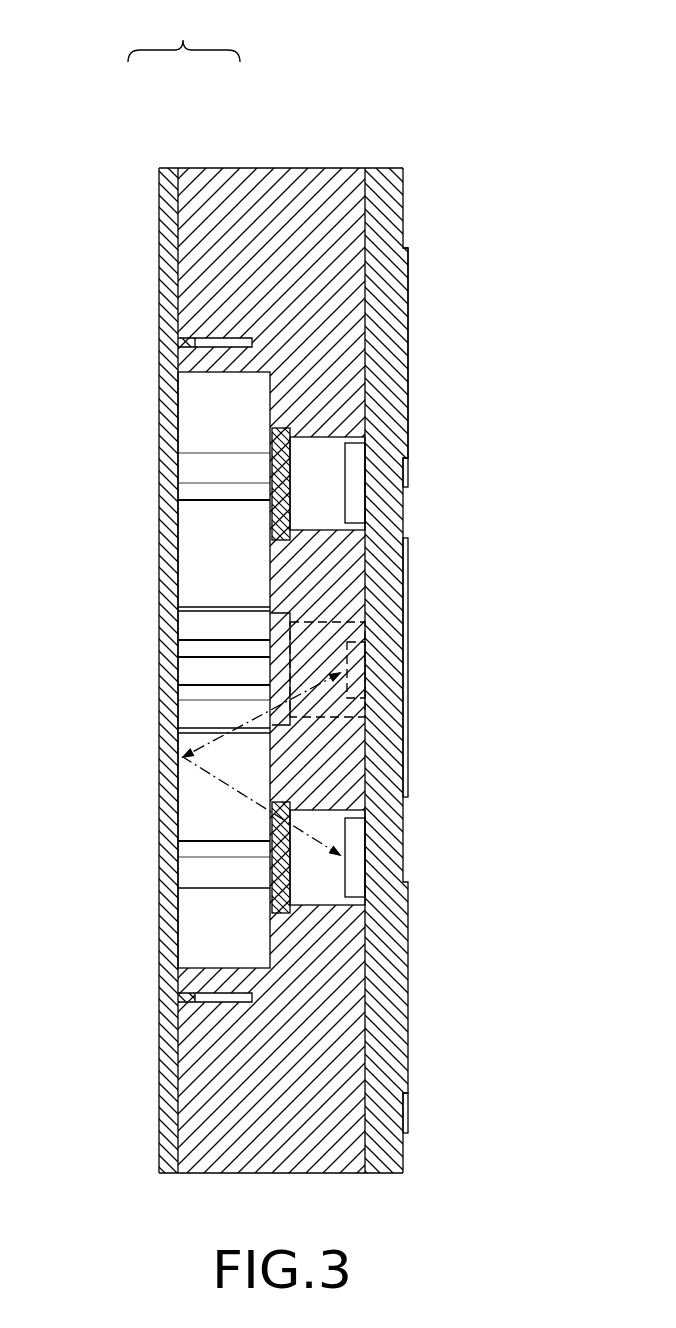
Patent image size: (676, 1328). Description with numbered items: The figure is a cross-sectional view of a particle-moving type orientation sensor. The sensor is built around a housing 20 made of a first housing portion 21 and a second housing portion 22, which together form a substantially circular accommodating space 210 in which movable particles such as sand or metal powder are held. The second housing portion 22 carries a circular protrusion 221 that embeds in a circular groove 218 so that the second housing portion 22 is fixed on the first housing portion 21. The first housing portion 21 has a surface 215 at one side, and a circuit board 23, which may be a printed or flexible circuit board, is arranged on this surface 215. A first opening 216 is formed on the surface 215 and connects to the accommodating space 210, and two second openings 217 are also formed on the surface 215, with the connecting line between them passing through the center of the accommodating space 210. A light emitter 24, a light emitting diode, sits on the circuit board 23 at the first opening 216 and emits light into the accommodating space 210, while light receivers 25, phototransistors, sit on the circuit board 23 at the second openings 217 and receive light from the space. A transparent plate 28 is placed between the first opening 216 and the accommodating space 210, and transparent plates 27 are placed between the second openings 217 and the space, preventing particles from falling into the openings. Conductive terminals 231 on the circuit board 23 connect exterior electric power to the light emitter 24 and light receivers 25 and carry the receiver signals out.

The housing 20 is at (184, 31).
The first housing portion 21 is at (270, 168).
The second housing portion 22 is at (167, 168).
The circuit board 23 is at (386, 168).
The surface 215 is at (374, 168).
The conductive terminals 231 is at (410, 326).
The circular groove 218 is at (220, 343).
The circular protrusion 221 is at (183, 340).
The accommodating space 210 is at (213, 423).
The transparent plates 27 is at (273, 473).
The transparent plate 28 is at (273, 668).
The second openings 217 is at (320, 513).
The light receivers 25 is at (357, 483).
The light emitter 24 is at (357, 668).
The first opening 216 is at (320, 703).